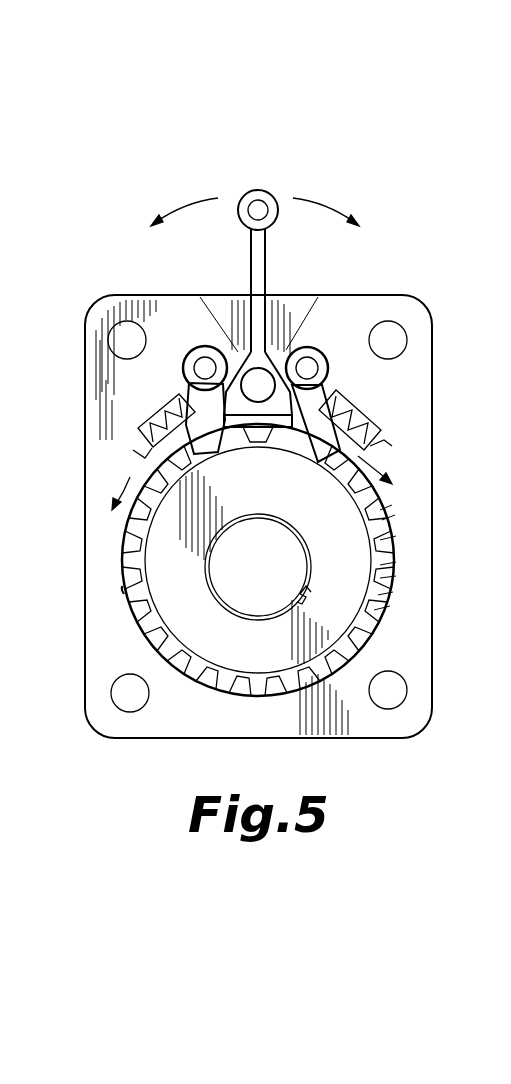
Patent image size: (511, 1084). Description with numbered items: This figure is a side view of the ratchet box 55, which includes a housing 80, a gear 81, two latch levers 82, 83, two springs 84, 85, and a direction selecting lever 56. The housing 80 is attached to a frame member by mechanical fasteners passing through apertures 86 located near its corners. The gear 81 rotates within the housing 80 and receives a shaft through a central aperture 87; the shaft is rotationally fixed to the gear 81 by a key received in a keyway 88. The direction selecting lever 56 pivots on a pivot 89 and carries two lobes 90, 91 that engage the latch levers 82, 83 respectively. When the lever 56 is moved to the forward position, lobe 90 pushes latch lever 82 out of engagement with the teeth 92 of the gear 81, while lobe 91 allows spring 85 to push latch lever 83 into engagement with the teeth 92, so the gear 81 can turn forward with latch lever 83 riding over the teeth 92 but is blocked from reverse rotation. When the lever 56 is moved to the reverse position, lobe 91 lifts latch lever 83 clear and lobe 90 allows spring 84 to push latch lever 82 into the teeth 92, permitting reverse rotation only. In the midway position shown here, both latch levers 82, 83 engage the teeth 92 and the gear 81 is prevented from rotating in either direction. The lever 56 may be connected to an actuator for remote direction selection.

The ratchet box 55 is at (60, 422).
The direction selecting lever 56 is at (258, 192).
The housing 80 is at (85, 578).
The gear 81 is at (206, 620).
The latch lever 82 is at (185, 366).
The latch lever 83 is at (328, 375).
The spring 84 is at (150, 450).
The spring 85 is at (368, 425).
The apertures 86 is at (133, 339).
The aperture 87 is at (285, 560).
The keyway 88 is at (305, 600).
The pivot 89 is at (260, 402).
The lobe 90 is at (180, 396).
The lobe 91 is at (292, 428).
The teeth 92 is at (125, 590).